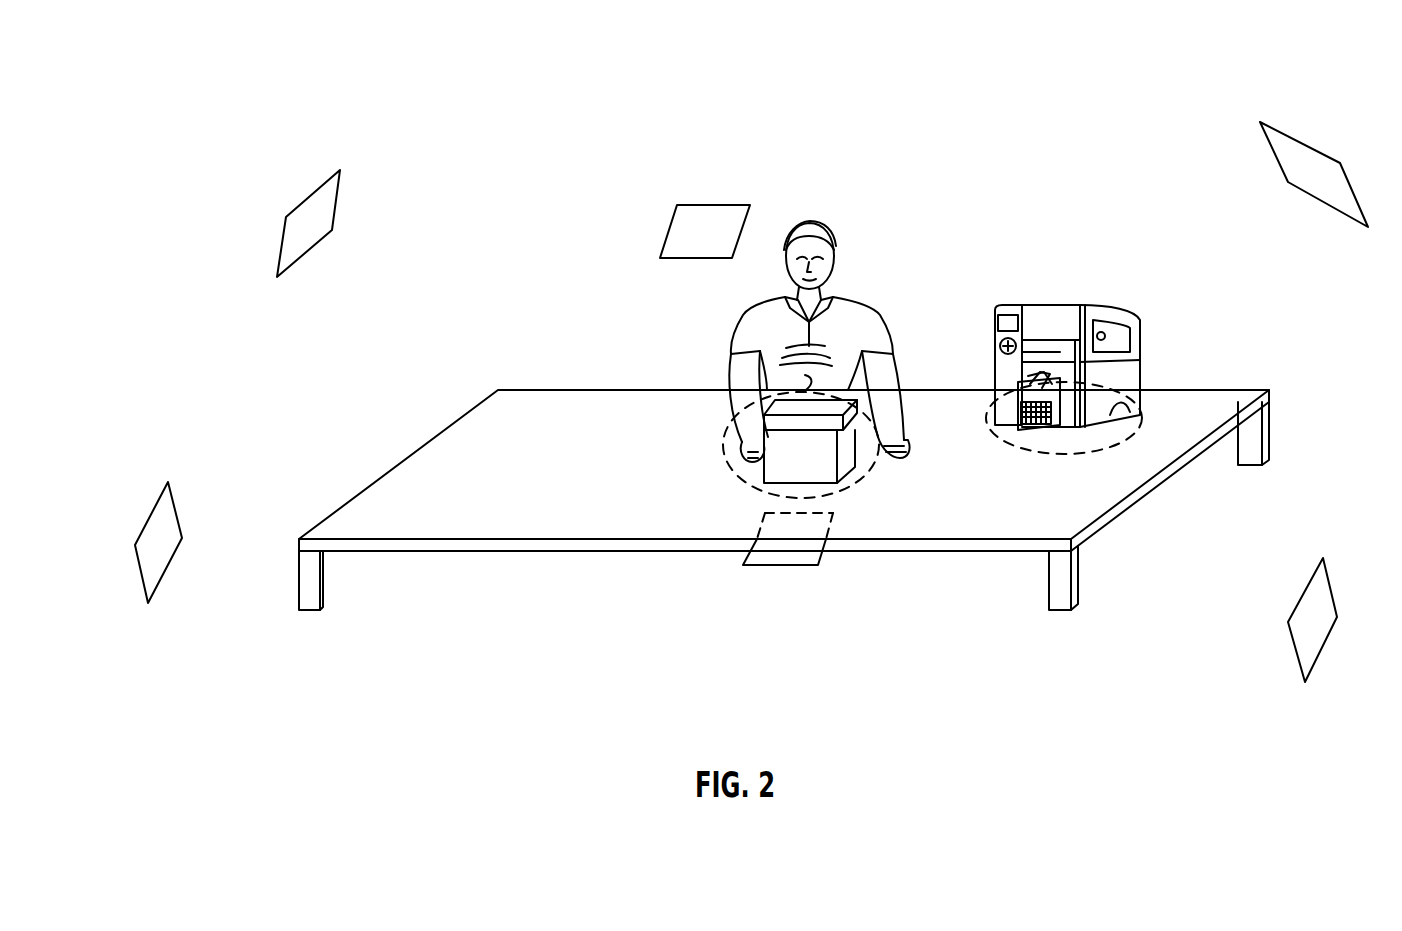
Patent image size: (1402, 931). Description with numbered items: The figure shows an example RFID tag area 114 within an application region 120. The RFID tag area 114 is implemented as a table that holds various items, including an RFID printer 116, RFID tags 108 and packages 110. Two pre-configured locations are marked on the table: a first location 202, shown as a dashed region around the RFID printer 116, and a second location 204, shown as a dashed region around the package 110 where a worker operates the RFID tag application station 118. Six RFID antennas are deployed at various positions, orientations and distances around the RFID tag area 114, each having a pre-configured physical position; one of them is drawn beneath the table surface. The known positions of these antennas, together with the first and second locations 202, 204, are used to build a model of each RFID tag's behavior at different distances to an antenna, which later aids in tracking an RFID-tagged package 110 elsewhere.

The application region 120 is at (548, 108).
The RFID tag area 114 is at (925, 553).
The RFID tag application station 118 is at (708, 321).
The second location 204 is at (718, 455).
The package 110 is at (845, 467).
The first location 202 is at (1097, 448).
The RFID printer 116 is at (1107, 307).
The RFID tag 108 is at (1040, 387).